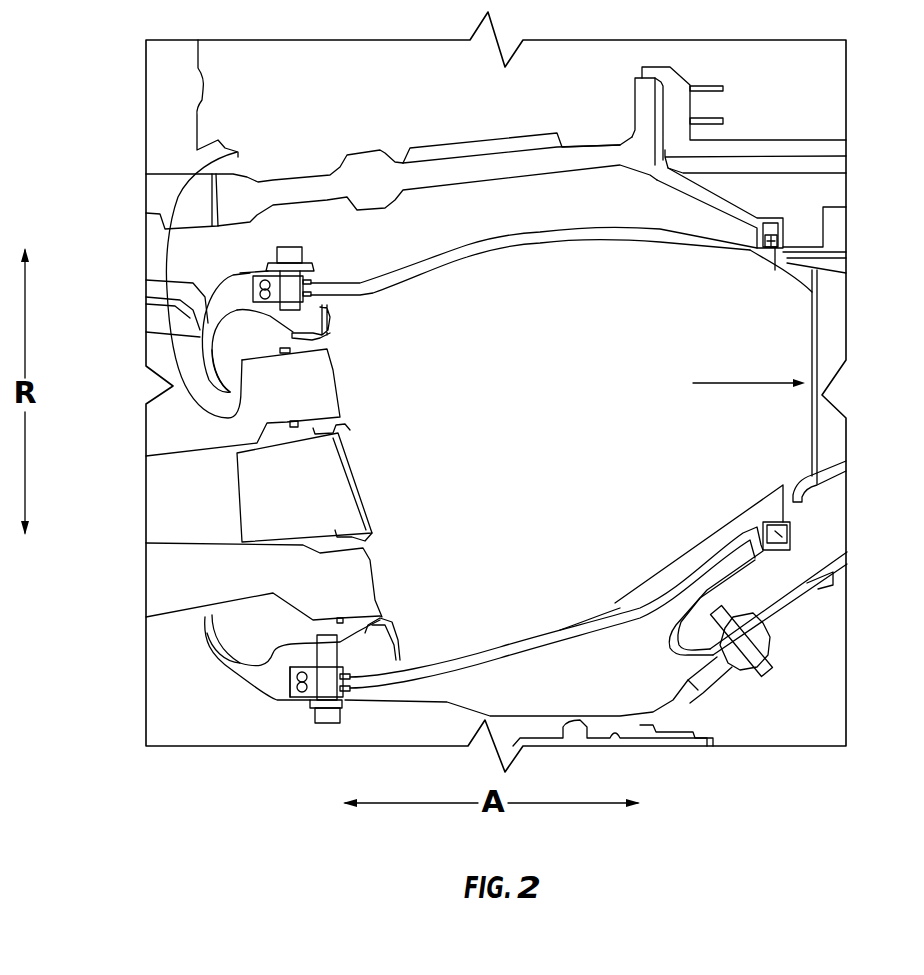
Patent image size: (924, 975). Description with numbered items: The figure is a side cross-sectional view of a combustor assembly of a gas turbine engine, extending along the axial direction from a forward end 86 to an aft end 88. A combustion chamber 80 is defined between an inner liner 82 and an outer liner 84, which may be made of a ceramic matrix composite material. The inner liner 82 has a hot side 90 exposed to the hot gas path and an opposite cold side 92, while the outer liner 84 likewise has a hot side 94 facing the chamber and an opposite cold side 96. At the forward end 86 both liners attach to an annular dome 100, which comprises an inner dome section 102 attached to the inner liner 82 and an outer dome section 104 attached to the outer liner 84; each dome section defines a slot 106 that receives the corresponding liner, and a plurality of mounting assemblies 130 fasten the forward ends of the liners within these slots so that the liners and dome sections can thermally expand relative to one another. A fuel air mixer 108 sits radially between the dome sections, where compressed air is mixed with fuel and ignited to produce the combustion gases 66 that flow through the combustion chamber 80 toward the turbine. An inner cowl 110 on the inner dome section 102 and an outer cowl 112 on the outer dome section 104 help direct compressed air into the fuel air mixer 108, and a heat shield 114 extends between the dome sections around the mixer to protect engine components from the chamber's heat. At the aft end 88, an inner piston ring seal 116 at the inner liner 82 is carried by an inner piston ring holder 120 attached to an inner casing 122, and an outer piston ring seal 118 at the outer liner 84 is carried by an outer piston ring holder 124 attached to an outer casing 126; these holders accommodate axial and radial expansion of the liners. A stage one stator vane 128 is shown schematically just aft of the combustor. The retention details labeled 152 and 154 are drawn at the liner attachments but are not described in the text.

The combustion gases 66 is at (713, 383).
The combustion chamber 80 is at (540, 422).
The inner liner 82 is at (610, 600).
The outer liner 84 is at (547, 243).
The forward end 86 is at (212, 265).
The aft end 88 is at (797, 232).
The hot side 90 is at (683, 556).
The cold side 92 is at (587, 642).
The hot side 94 is at (623, 242).
The cold side 96 is at (468, 245).
The annular dome 100 is at (207, 680).
The inner dome section 102 is at (273, 680).
The outer dome section 104 is at (166, 265).
The slot 106 is at (313, 278).
The fuel air mixer 108 is at (163, 417).
The inner cowl 110 is at (207, 646).
The outer cowl 112 is at (180, 346).
The heat shield 114 is at (363, 487).
The inner piston ring seal 116 is at (790, 539).
The outer piston ring seal 118 is at (771, 228).
The inner piston ring holder 120 is at (742, 569).
The inner casing 122 is at (690, 697).
The outer piston ring holder 124 is at (773, 240).
The outer casing 126 is at (477, 170).
The stage one stator vane 128 is at (835, 380).
The mounting assembly 130 is at (278, 232).
The retention clip 152 is at (327, 342).
The retention clip 154 is at (378, 540).